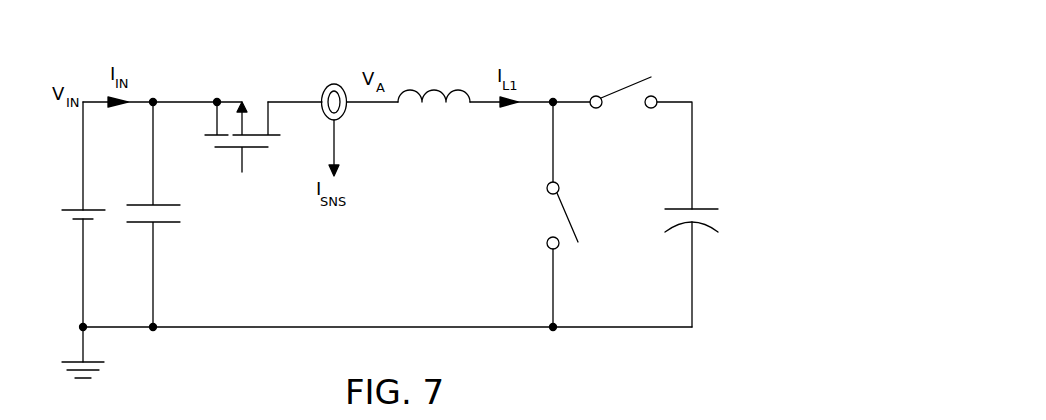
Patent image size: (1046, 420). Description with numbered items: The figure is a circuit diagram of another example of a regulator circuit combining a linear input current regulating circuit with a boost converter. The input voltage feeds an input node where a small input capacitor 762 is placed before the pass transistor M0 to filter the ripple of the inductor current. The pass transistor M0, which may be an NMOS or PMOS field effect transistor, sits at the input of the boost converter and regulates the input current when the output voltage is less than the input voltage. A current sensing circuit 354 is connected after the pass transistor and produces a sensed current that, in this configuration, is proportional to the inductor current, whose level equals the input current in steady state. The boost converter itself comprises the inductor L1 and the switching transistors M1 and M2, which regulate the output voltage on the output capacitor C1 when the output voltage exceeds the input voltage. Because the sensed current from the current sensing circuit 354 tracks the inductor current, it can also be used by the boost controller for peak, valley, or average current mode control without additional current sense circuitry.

The current sensing circuit 354 is at (336, 84).
The input capacitor 762 is at (165, 204).
The pass transistor M0 is at (242, 121).
The switching transistor M1 is at (551, 214).
The switching transistor M2 is at (623, 108).
The inductor L1 is at (434, 81).
The output capacitor C1 is at (705, 211).